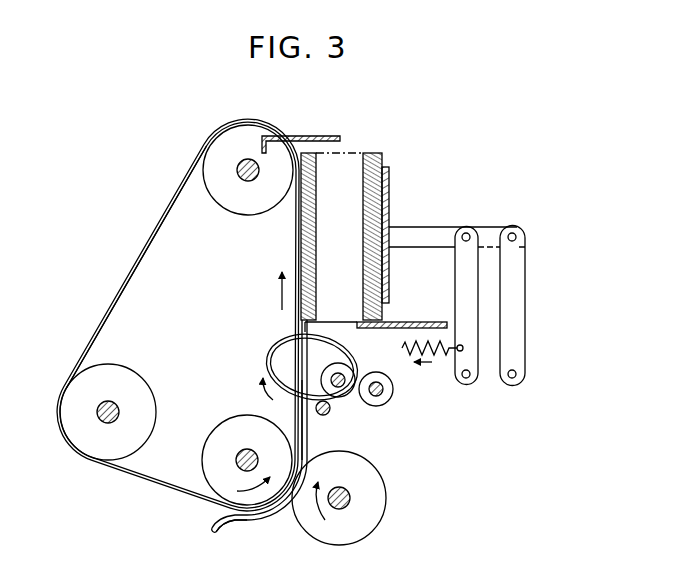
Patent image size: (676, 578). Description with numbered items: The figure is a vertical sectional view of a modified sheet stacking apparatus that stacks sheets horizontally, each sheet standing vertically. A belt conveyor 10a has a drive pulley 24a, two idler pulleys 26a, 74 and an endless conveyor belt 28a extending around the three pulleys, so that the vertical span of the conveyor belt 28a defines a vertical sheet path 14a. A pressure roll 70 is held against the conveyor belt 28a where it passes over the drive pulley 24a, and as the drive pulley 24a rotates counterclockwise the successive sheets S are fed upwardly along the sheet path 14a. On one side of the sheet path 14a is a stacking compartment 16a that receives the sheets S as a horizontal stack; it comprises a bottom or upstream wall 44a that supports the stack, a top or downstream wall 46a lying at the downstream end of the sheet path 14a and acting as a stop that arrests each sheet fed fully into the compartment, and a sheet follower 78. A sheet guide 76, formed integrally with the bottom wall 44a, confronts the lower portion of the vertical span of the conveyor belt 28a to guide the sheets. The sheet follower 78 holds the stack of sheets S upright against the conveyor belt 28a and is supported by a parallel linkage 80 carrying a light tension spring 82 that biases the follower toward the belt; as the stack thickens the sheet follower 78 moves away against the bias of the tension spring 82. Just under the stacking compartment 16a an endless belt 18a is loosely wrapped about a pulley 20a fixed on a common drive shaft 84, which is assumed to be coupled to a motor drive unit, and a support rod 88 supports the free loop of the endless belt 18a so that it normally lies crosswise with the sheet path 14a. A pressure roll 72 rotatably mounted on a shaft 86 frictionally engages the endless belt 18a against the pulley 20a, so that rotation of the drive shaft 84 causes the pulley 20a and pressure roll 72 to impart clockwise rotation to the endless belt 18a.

The belt conveyor 10a is at (140, 256).
The sheet path 14a is at (300, 425).
The stacking compartment 16a is at (358, 144).
The endless belt 18a is at (285, 343).
The pulley 20a is at (343, 372).
The drive pulley 24a is at (212, 460).
The idler pulley 26a is at (240, 198).
The conveyor belt 28a is at (136, 480).
The bottom wall 44a is at (413, 320).
The top wall 46a is at (302, 134).
The sheet S is at (373, 152).
The pressure roll 70 is at (364, 525).
The pressure roll 72 is at (393, 390).
The idler pulley 74 is at (84, 437).
The sheet guide 76 is at (270, 520).
The sheet follower 78 is at (390, 194).
The parallel linkage 80 is at (518, 290).
The tension spring 82 is at (441, 358).
The drive shaft 84 is at (342, 392).
The shaft 86 is at (378, 396).
The support rod 88 is at (325, 415).